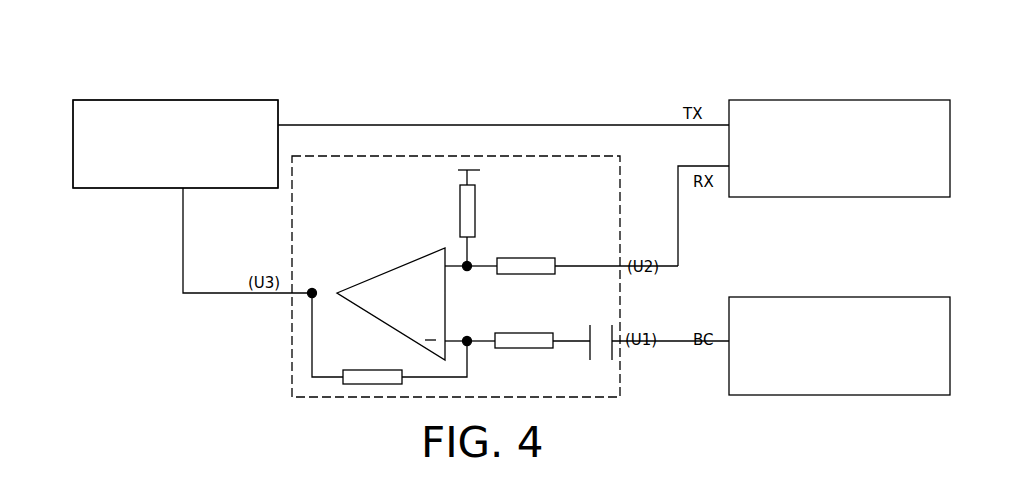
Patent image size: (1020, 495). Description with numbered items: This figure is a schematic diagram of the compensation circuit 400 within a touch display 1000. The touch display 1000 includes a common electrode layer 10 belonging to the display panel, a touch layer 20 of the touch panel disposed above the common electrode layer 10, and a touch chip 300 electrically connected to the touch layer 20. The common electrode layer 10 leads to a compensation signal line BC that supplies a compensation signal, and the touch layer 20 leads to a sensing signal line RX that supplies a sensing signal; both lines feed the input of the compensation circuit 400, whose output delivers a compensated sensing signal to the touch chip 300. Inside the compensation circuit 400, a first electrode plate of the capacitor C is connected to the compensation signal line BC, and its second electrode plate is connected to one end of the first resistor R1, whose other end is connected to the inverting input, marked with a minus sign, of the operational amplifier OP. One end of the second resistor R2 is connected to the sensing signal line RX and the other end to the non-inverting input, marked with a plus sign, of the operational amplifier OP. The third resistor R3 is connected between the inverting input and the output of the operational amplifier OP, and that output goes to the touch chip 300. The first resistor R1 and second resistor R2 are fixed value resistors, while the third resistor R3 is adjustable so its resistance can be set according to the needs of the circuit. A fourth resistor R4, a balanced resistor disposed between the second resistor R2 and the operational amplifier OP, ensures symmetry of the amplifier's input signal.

The touch display 1000 is at (225, 90).
The touch chip 300 is at (197, 153).
The compensation circuit 400 is at (292, 364).
The touch layer 20 is at (852, 158).
The common electrode layer 10 is at (852, 356).
The operational amplifier OP is at (404, 304).
The first resistor R1 is at (528, 329).
The second resistor R2 is at (572, 257).
The third resistor R3 is at (389, 338).
The fourth resistor R4 is at (457, 218).
The capacitor C is at (659, 331).